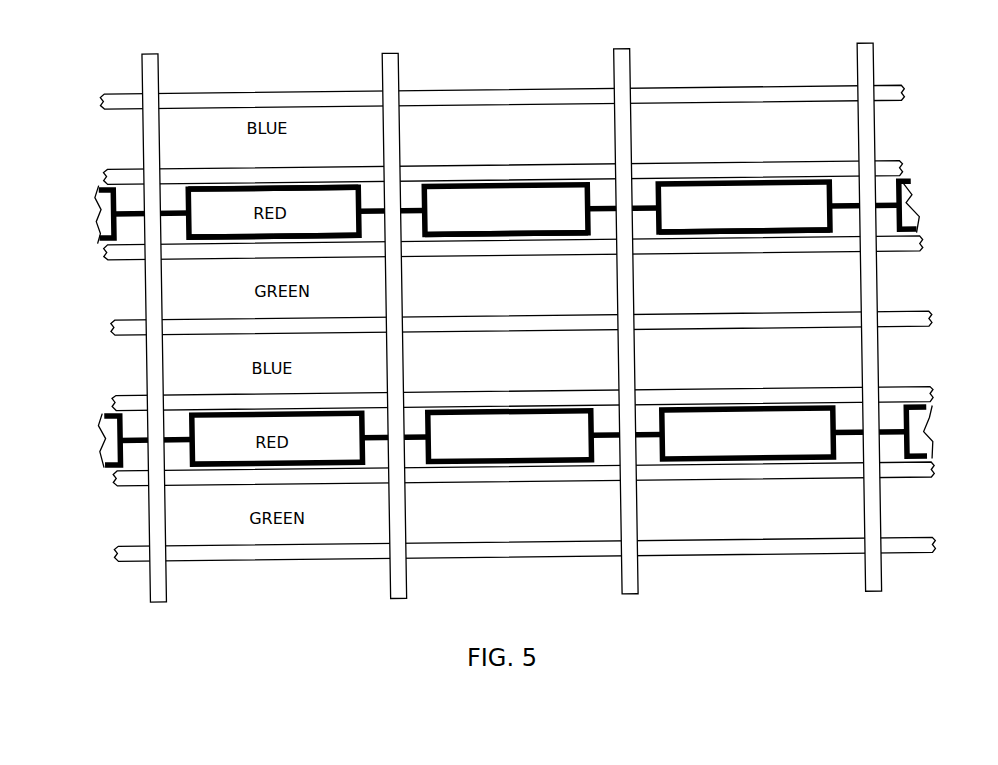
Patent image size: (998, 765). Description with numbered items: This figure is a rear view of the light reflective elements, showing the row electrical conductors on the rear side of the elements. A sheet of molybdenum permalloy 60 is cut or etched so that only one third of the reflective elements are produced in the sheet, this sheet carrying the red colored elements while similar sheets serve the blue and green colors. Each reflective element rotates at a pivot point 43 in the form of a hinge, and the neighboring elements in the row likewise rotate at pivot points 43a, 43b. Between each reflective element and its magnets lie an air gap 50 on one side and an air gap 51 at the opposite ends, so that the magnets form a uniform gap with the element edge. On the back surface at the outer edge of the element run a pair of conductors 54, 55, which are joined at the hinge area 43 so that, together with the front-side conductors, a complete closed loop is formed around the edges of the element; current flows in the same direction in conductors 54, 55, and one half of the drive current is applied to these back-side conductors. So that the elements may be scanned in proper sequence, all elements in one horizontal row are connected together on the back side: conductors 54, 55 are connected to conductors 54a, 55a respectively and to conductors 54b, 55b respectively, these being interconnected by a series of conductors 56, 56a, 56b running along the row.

The sheet of molybdenum permalloy 60 is at (905, 92).
The conductor 56 is at (135, 212).
The conductor 56a is at (405, 183).
The conductor 56b is at (618, 207).
The air gap 50 is at (263, 183).
The air gap 51 is at (242, 238).
The conductor 54 is at (190, 190).
The conductor 54a is at (506, 190).
The conductor 54b is at (710, 182).
The conductor 55 is at (198, 240).
The conductor 55a is at (487, 237).
The conductor 55b is at (712, 238).
The pivot point 43 is at (155, 218).
The pivot point 43a is at (392, 207).
The pivot point 43b is at (617, 200).